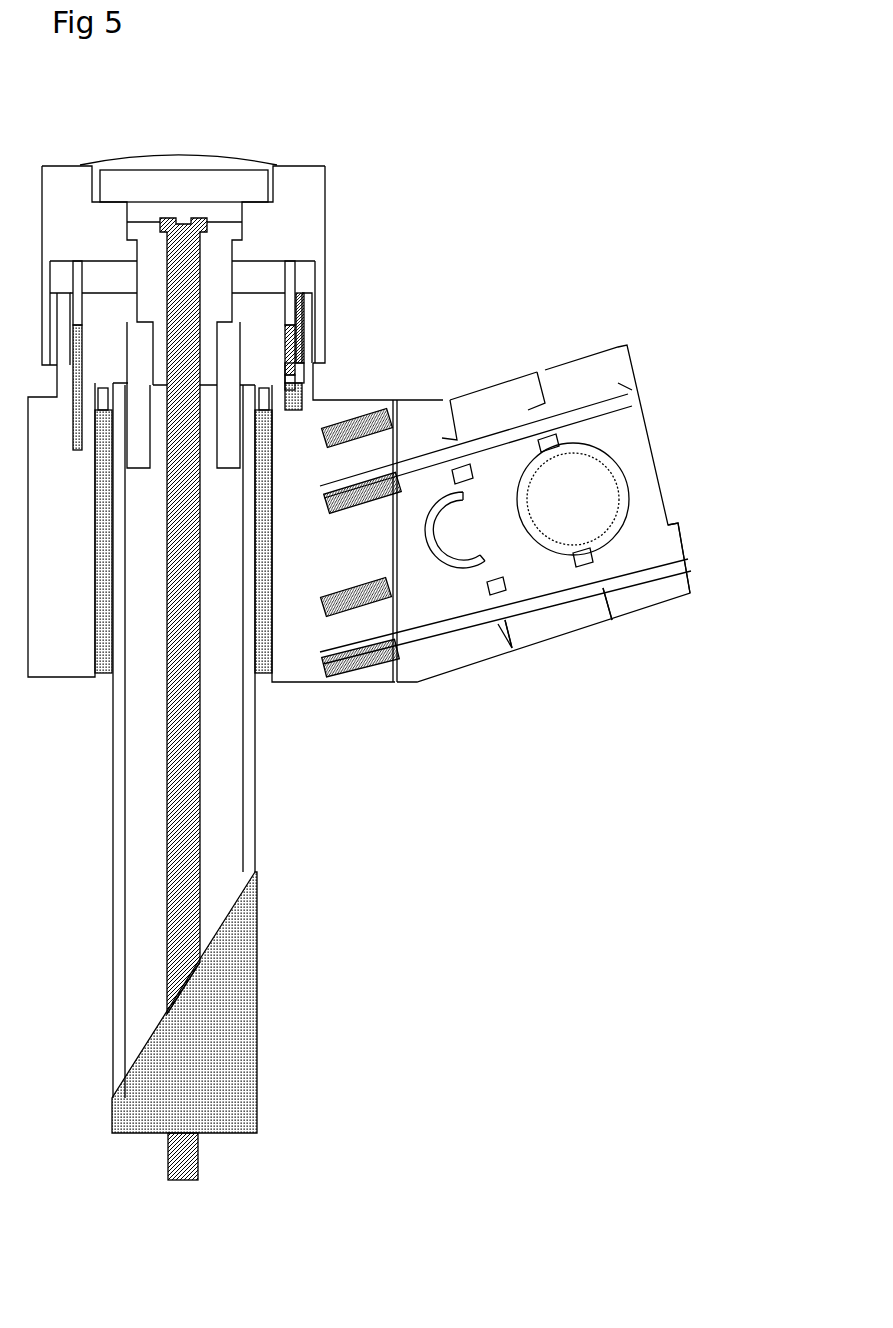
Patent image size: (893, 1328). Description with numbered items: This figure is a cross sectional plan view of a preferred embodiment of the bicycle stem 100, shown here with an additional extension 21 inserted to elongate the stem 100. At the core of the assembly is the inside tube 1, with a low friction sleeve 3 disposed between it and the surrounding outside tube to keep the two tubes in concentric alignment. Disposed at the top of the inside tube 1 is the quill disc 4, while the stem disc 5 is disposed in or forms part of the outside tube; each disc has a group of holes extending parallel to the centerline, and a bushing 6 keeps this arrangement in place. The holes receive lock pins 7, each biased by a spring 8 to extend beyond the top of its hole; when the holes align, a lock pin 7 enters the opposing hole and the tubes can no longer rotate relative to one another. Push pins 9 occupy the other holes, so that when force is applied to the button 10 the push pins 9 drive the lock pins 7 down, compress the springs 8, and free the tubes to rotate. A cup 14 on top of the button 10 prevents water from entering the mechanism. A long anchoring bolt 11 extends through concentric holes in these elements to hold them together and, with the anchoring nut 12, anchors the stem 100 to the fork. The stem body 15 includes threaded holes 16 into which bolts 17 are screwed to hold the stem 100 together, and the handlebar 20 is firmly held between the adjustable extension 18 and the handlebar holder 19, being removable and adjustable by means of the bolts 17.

The inside tube 1 is at (245, 837).
The low friction sleeve 3 is at (262, 668).
The quill disc 4 is at (290, 343).
The stem disc 5 is at (303, 380).
The bushing 6 is at (218, 253).
The lock pin 7 is at (303, 325).
The spring 8 is at (297, 410).
The push pin 9 is at (290, 267).
The button 10 is at (298, 177).
The anchoring bolt 11 is at (182, 1162).
The anchoring nut 12 is at (182, 1070).
The cup 14 is at (160, 165).
The stem body 15 is at (300, 660).
The threaded holes 16 is at (415, 555).
The bolts 17 is at (448, 622).
The adjustable extension 18 is at (490, 640).
The handlebar holder 19 is at (660, 587).
The handlebar 20 is at (600, 537).
The additional extension 21 is at (540, 628).
The stem 100 is at (466, 367).